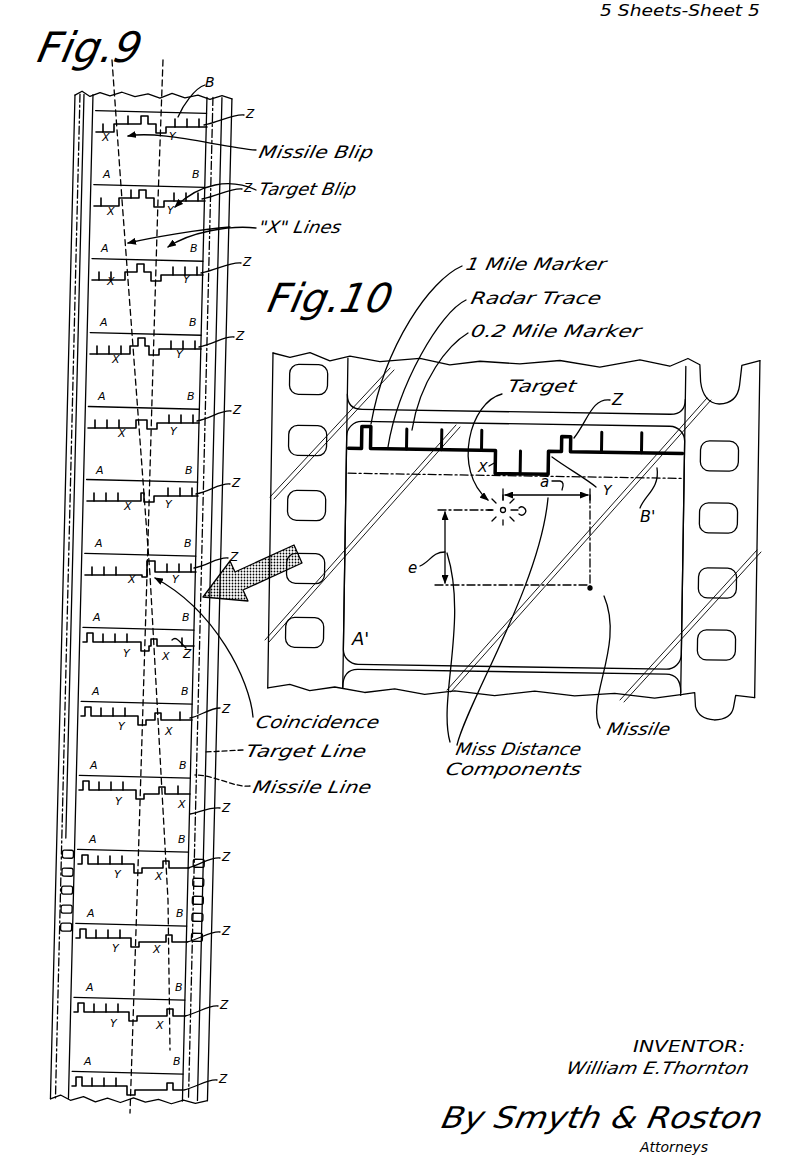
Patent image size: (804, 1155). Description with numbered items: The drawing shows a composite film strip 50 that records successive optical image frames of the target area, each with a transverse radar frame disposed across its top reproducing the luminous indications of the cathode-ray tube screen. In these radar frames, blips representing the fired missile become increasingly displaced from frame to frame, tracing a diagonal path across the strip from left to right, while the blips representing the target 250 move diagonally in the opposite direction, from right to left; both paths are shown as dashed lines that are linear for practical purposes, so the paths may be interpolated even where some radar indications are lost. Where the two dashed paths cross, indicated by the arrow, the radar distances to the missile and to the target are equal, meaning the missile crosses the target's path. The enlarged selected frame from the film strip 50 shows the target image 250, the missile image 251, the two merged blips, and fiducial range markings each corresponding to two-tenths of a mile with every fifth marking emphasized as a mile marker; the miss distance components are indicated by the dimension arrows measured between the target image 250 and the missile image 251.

In FIG. 9, the target image 250 is at (121, 1026).
In FIG. 10, the target image 250 is at (497, 513).
In FIG. 9, the missile image 251 is at (140, 1044).
In FIG. 10, the missile image 251 is at (596, 587).
In FIG. 9, the film strip 50 is at (168, 1093).
In FIG. 10, the film strip 50 is at (418, 688).